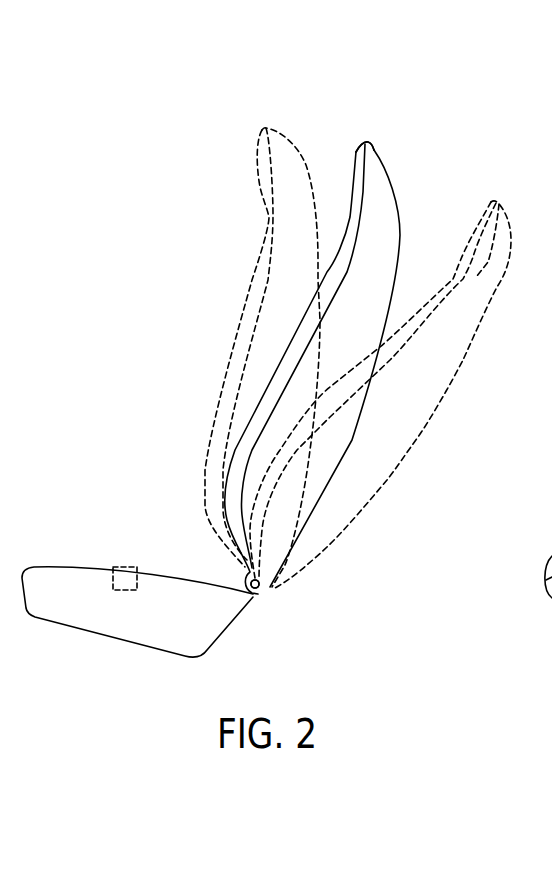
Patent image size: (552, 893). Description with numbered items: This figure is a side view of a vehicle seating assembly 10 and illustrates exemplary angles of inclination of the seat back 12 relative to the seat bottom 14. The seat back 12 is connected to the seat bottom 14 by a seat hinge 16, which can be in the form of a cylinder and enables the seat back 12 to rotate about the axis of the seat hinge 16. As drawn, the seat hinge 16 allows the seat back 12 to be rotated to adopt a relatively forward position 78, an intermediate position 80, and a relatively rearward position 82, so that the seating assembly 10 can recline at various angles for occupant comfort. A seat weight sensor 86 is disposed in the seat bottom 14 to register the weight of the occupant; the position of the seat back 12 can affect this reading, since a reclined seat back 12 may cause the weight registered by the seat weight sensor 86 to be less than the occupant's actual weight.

The seating assembly 10 is at (212, 146).
The seat back 12 is at (388, 224).
The seat bottom 14 is at (120, 610).
The seat hinge 16 is at (266, 595).
The relatively forward position 78 is at (299, 159).
The intermediate position 80 is at (380, 172).
The relatively rearward position 82 is at (494, 285).
The seat weight sensor 86 is at (128, 567).